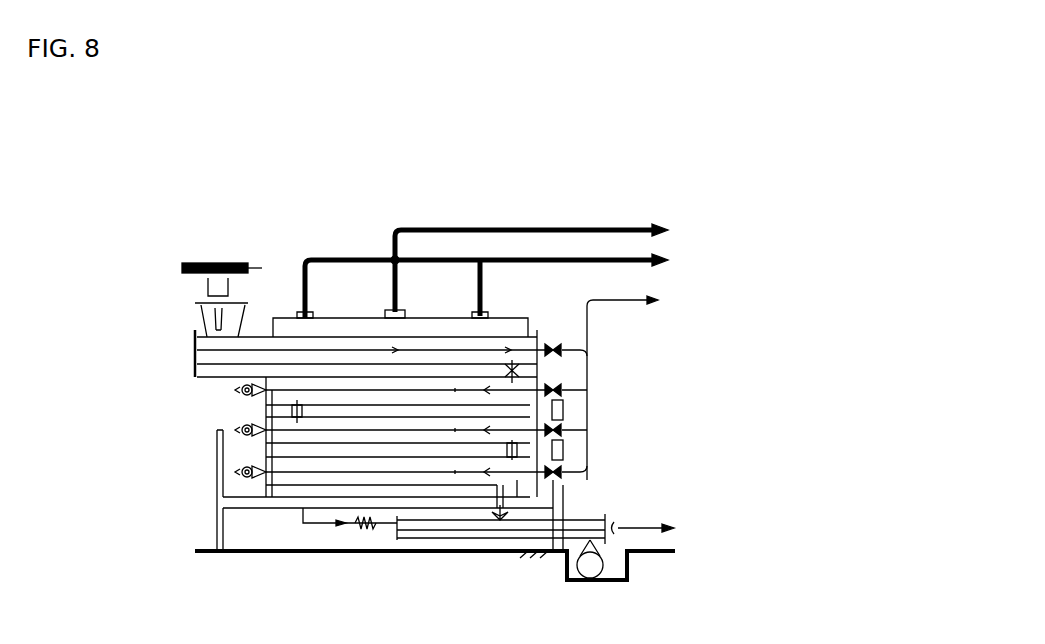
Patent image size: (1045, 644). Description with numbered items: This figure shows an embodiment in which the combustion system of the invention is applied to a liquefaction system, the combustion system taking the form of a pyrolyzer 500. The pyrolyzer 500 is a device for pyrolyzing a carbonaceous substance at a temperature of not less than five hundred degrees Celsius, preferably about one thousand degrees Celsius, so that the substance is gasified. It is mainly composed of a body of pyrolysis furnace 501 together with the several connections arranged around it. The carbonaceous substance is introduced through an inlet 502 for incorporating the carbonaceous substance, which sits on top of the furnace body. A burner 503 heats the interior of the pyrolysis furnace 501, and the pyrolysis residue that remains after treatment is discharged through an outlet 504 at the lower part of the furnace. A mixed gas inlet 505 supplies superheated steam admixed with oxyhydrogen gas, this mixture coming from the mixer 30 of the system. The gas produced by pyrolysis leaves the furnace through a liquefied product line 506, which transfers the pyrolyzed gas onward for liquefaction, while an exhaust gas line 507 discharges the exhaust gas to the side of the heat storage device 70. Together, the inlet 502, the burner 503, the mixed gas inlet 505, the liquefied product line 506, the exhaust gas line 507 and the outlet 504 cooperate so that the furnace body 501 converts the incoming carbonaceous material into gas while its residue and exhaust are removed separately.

The pyrolyzer 500 is at (666, 155).
The body of pyrolysis furnace 501 is at (513, 455).
The inlet for incorporating a carbonaceous substance 502 is at (171, 276).
The burner 503 is at (196, 420).
The outlet 504 is at (533, 526).
The mixed gas inlet 505 is at (666, 388).
The liquefied product line 506 is at (575, 286).
The exhaust gas line 507 is at (603, 267).
The heat storage device 70 is at (766, 199).
The mixer 30 is at (822, 420).